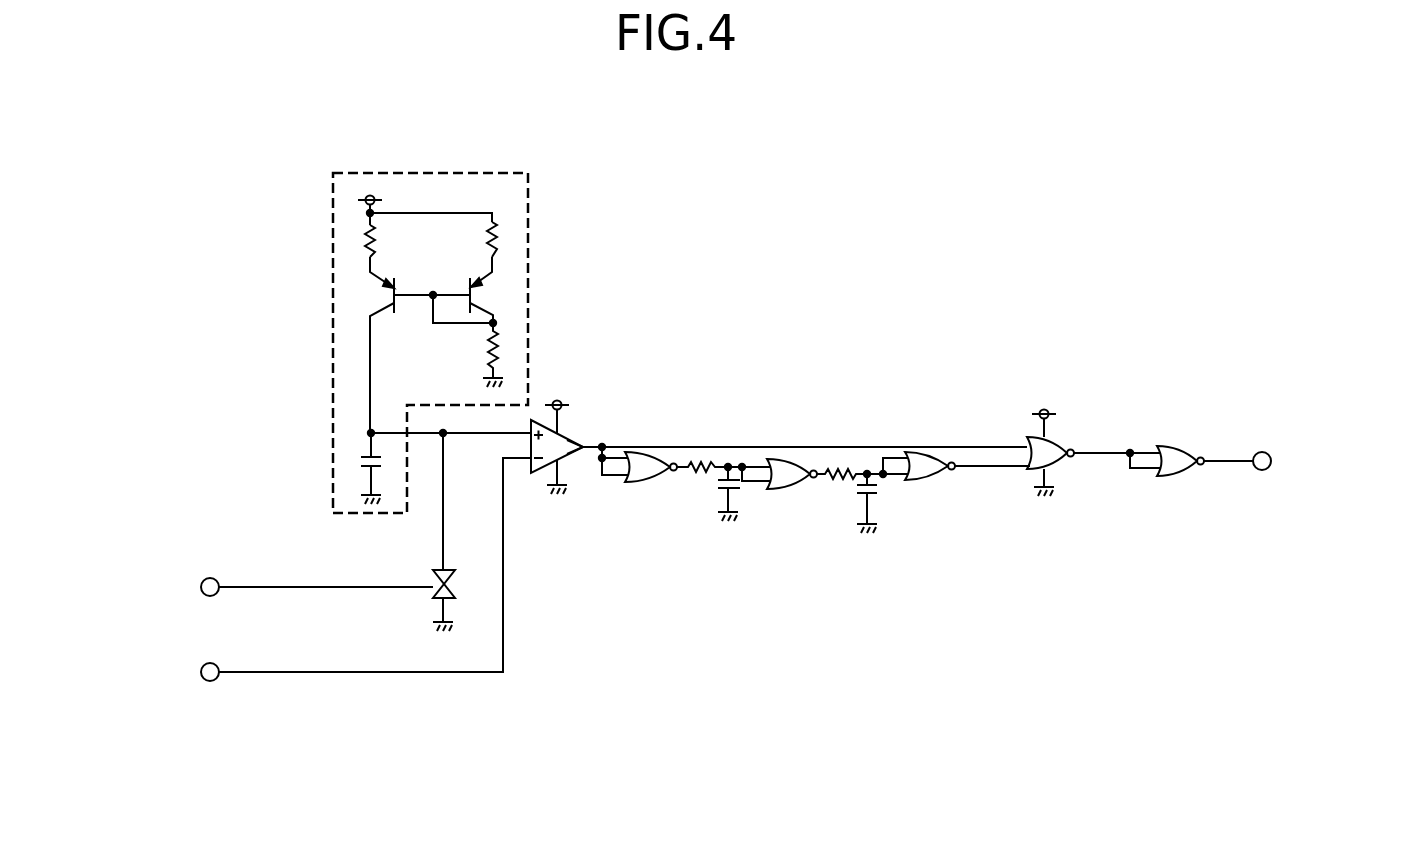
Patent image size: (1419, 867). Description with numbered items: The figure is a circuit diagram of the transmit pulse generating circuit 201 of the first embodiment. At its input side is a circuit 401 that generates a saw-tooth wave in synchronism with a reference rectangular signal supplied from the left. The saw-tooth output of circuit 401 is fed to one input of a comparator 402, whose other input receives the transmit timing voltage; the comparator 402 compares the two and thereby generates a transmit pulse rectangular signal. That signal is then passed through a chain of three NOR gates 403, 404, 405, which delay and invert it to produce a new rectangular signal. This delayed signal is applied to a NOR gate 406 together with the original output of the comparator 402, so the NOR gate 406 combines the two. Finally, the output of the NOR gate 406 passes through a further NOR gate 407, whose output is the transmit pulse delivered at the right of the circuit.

The transmit pulse generating circuit 201 is at (680, 238).
The saw-tooth wave generating circuit 401 is at (530, 232).
The comparator 402 is at (573, 427).
The NOR gate 403 is at (643, 483).
The NOR gate 404 is at (785, 490).
The NOR gate 405 is at (921, 481).
The NOR gate 406 is at (1060, 470).
The NOR gate 407 is at (1166, 447).